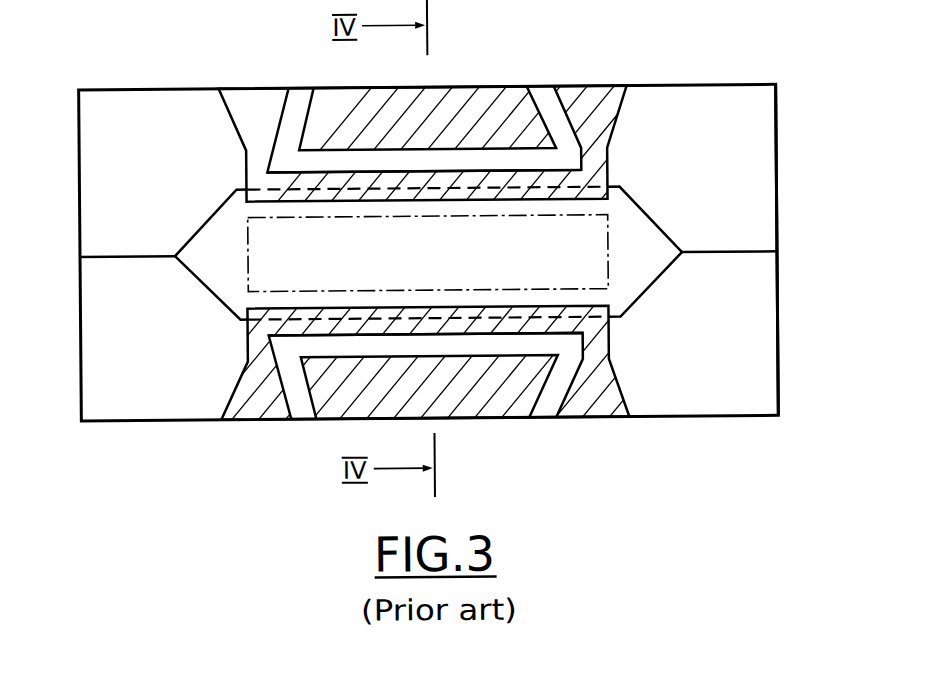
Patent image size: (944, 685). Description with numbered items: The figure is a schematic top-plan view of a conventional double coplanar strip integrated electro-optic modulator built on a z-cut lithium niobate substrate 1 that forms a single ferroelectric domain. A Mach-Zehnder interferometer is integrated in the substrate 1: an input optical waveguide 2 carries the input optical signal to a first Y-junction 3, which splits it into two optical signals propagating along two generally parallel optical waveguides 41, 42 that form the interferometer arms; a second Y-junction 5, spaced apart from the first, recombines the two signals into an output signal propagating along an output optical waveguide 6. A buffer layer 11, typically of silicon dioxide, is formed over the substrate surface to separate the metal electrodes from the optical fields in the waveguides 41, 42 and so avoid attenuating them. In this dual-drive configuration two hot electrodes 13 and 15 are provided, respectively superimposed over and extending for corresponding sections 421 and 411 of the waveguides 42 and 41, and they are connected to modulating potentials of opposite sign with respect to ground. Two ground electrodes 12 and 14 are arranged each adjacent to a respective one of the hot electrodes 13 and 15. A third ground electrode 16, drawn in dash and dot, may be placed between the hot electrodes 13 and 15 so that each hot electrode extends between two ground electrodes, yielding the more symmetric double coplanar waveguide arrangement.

The substrate 1 is at (713, 89).
The buffer layer 11 is at (757, 176).
The input optical waveguide 2 is at (122, 258).
The first Y-junction 3 is at (173, 256).
The second Y-junction 5 is at (682, 257).
The output optical waveguide 6 is at (718, 258).
The ground electrode 12 is at (462, 405).
The hot electrode 13 is at (607, 406).
The ground electrode 14 is at (463, 111).
The hot electrode 15 is at (590, 111).
The third ground electrode 16 is at (610, 283).
The optical waveguide 41 is at (232, 187).
The section of waveguide 41 411 is at (285, 177).
The optical waveguide 42 is at (232, 332).
The section of waveguide 42 421 is at (299, 343).